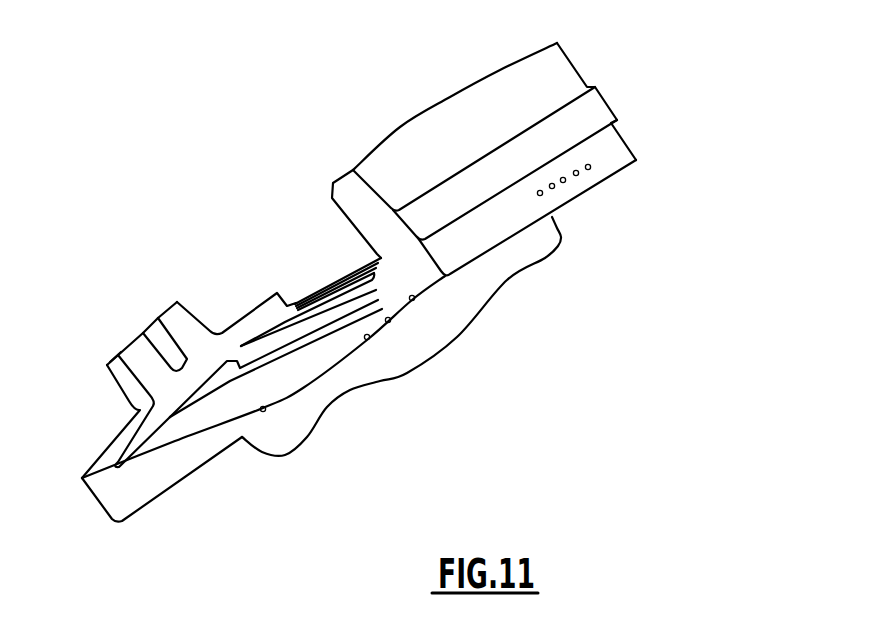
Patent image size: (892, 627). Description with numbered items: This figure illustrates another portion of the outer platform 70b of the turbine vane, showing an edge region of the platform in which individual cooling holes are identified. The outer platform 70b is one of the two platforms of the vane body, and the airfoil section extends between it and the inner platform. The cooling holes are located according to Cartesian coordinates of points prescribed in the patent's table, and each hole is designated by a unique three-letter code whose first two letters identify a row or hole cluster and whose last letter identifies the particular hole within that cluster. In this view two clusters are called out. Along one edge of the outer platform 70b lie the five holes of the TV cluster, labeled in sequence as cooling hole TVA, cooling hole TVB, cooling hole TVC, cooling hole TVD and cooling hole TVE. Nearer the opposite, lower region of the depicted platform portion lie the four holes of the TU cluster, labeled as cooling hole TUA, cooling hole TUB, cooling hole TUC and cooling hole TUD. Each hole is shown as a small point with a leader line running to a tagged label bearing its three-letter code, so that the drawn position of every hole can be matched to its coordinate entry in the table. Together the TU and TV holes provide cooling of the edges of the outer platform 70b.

The outer platform 70b is at (608, 147).
The cooling hole TVE is at (590, 169).
The cooling hole TVD is at (578, 175).
The cooling hole TVC is at (565, 182).
The cooling hole TVB is at (553, 188).
The cooling hole TVA is at (541, 195).
The cooling hole TUA is at (414, 300).
The cooling hole TUB is at (389, 322).
The cooling hole TUC is at (367, 340).
The cooling hole TUD is at (263, 412).